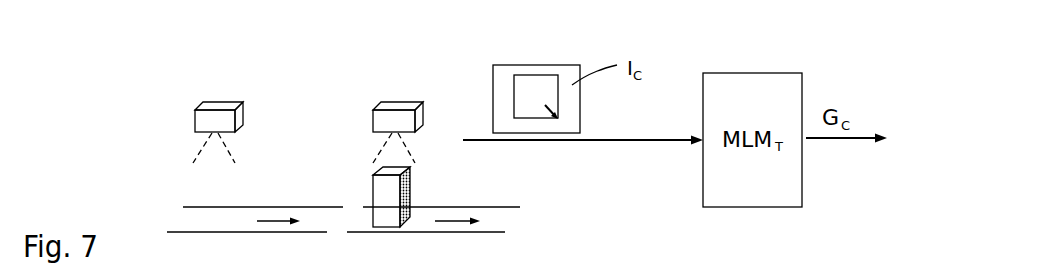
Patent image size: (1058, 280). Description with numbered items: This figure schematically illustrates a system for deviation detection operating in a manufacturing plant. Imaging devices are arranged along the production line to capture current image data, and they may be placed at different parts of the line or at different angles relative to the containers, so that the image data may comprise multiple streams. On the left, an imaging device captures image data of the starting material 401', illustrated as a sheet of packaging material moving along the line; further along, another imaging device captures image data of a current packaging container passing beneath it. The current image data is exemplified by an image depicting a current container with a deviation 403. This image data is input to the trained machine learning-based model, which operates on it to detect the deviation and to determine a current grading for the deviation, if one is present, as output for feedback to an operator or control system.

The starting material 401' is at (255, 189).
The deviation 403 is at (566, 105).